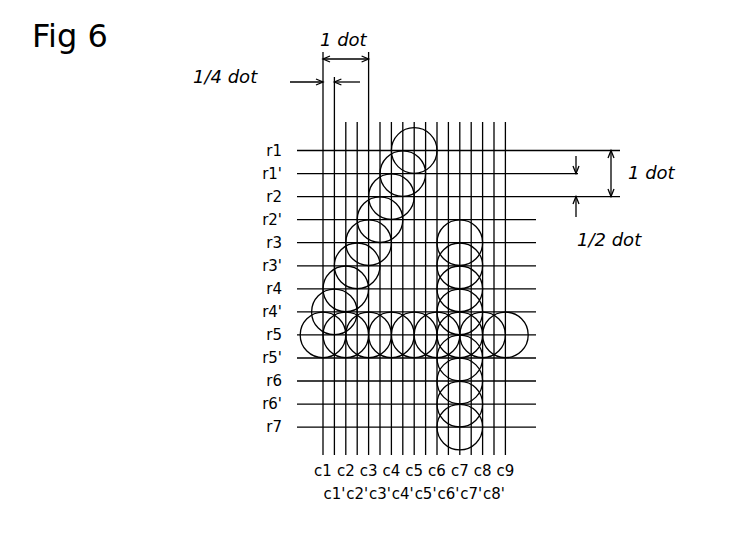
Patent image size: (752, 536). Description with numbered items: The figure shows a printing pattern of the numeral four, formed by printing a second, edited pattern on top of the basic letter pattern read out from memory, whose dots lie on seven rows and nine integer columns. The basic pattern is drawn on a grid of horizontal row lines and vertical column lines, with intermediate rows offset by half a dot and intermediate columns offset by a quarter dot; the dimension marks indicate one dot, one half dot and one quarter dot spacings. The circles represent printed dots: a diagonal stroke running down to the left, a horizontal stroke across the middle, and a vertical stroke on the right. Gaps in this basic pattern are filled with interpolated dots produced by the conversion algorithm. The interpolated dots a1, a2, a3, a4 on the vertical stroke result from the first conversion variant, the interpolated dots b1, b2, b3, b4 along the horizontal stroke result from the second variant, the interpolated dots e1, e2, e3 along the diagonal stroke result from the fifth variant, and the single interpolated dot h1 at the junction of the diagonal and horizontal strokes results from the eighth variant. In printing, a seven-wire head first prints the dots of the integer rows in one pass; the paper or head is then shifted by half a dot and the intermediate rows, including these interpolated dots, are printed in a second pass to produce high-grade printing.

The interpolated dot e1 is at (336, 258).
The interpolated dot e2 is at (365, 212).
The interpolated dot e3 is at (383, 151).
The interpolated dot h1 is at (325, 304).
The interpolated dot a1 is at (504, 266).
The interpolated dot a2 is at (504, 312).
The interpolated dot a3 is at (504, 372).
The interpolated dot a4 is at (504, 407).
The interpolated dot b1 is at (334, 371).
The interpolated dot b2 is at (381, 371).
The interpolated dot b3 is at (432, 371).
The interpolated dot b4 is at (515, 349).